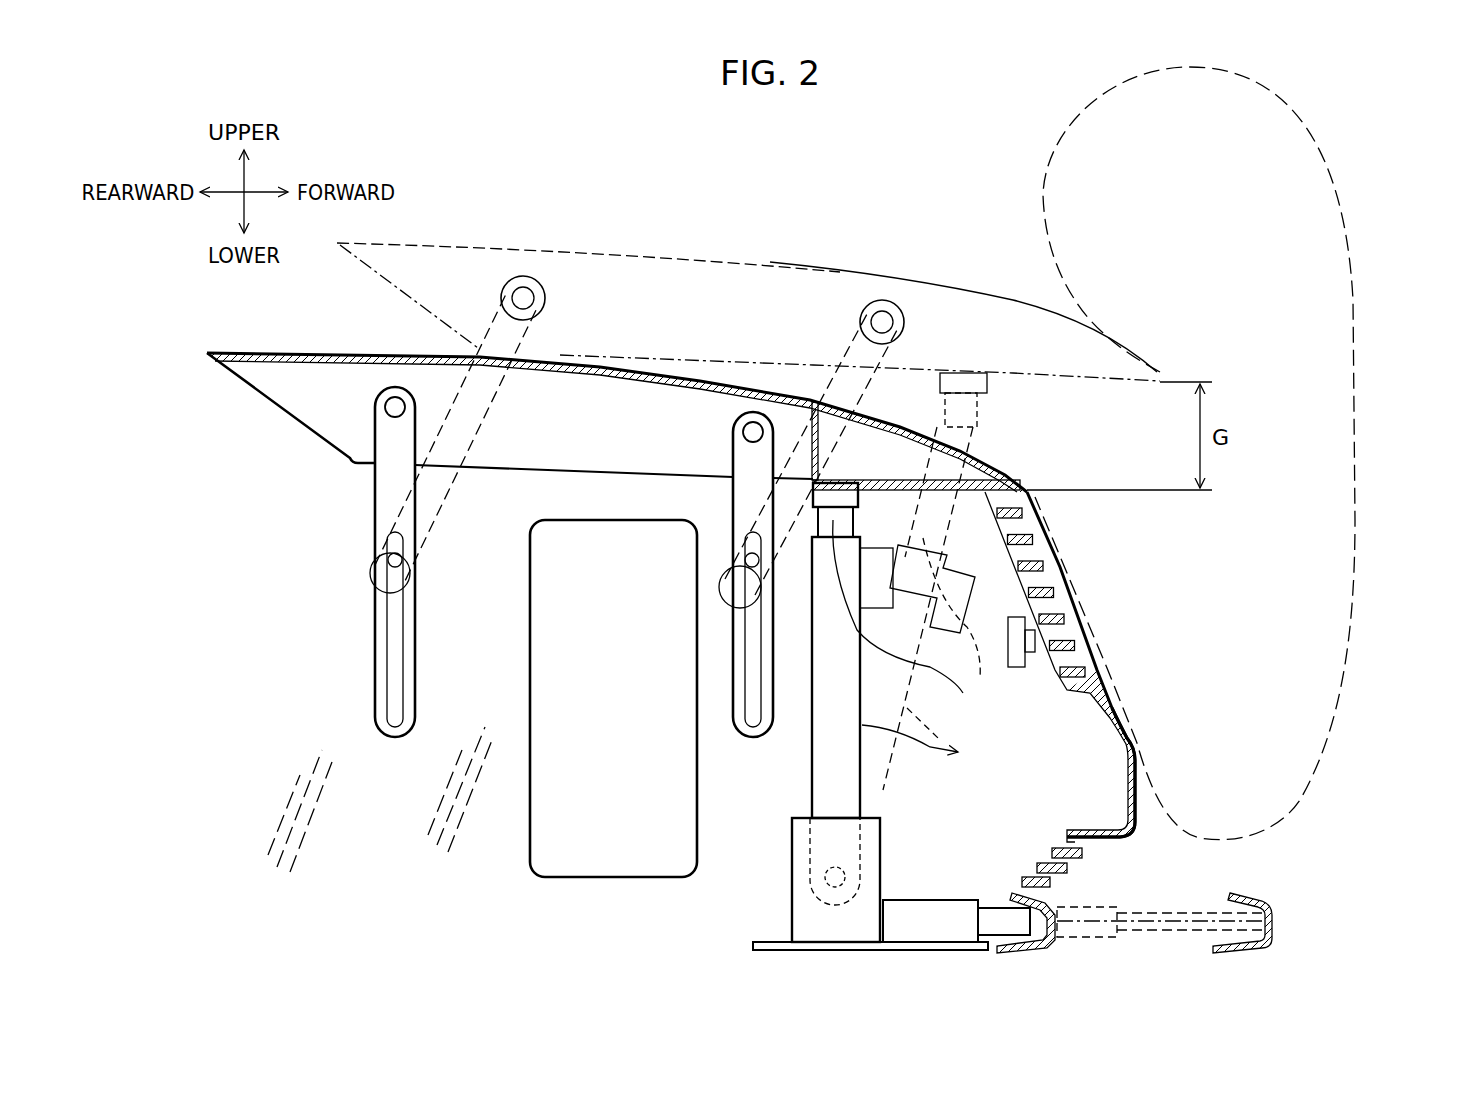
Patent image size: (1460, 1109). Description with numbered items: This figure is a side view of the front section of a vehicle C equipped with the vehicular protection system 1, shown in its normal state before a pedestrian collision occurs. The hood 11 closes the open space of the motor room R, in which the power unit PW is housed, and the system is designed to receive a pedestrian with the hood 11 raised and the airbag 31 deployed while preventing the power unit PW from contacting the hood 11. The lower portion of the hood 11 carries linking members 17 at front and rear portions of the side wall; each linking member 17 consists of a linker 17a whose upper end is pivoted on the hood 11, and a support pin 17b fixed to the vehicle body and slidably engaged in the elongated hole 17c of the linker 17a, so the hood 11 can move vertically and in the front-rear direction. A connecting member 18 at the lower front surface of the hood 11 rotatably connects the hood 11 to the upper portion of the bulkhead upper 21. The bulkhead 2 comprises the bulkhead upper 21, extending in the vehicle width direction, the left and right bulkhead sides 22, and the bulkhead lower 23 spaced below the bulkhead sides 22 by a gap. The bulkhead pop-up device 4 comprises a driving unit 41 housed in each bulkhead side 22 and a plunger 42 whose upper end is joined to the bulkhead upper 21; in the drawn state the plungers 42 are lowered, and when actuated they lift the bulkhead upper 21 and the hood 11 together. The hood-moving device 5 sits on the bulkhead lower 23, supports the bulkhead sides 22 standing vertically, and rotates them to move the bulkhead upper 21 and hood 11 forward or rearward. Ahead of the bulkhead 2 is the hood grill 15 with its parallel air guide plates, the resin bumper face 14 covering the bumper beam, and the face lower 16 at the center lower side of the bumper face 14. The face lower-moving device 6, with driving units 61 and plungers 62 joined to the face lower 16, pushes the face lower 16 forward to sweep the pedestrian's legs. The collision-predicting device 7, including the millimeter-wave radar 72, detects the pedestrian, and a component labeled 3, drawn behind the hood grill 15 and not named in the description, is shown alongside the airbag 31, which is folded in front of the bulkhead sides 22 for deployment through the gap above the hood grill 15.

The vehicular protection system 1 is at (883, 240).
The bulkhead 2 is at (808, 739).
The camera 3 is at (880, 547).
The bulkhead pop-up device 4 is at (932, 647).
The hood-moving device 5 is at (792, 888).
The face lower-moving device 6 is at (956, 875).
The collision-predicting device 7 is at (1084, 641).
The millimeter-wave radar 72 is at (1032, 640).
The hood 11 is at (745, 410).
The bumper face 14 is at (1137, 793).
The hood grill 15 is at (1043, 587).
The face lower 16 is at (1200, 891).
The linking member 17 is at (569, 466).
The linker 17a is at (375, 493).
The support pin 17b is at (350, 565).
The elongated hole 17c is at (397, 642).
The connecting member 18 is at (858, 478).
The bulkhead upper 21 is at (985, 410).
The bulkhead side 22 is at (810, 780).
The bulkhead lower 23 is at (768, 942).
The airbag 31 is at (1333, 183).
The driving unit 41 is at (927, 741).
The plunger 42 is at (913, 615).
The driving unit 61 is at (908, 900).
The plunger 62 is at (1001, 892).
The vehicle C is at (433, 178).
The motor room R is at (462, 612).
The power unit PW is at (600, 878).